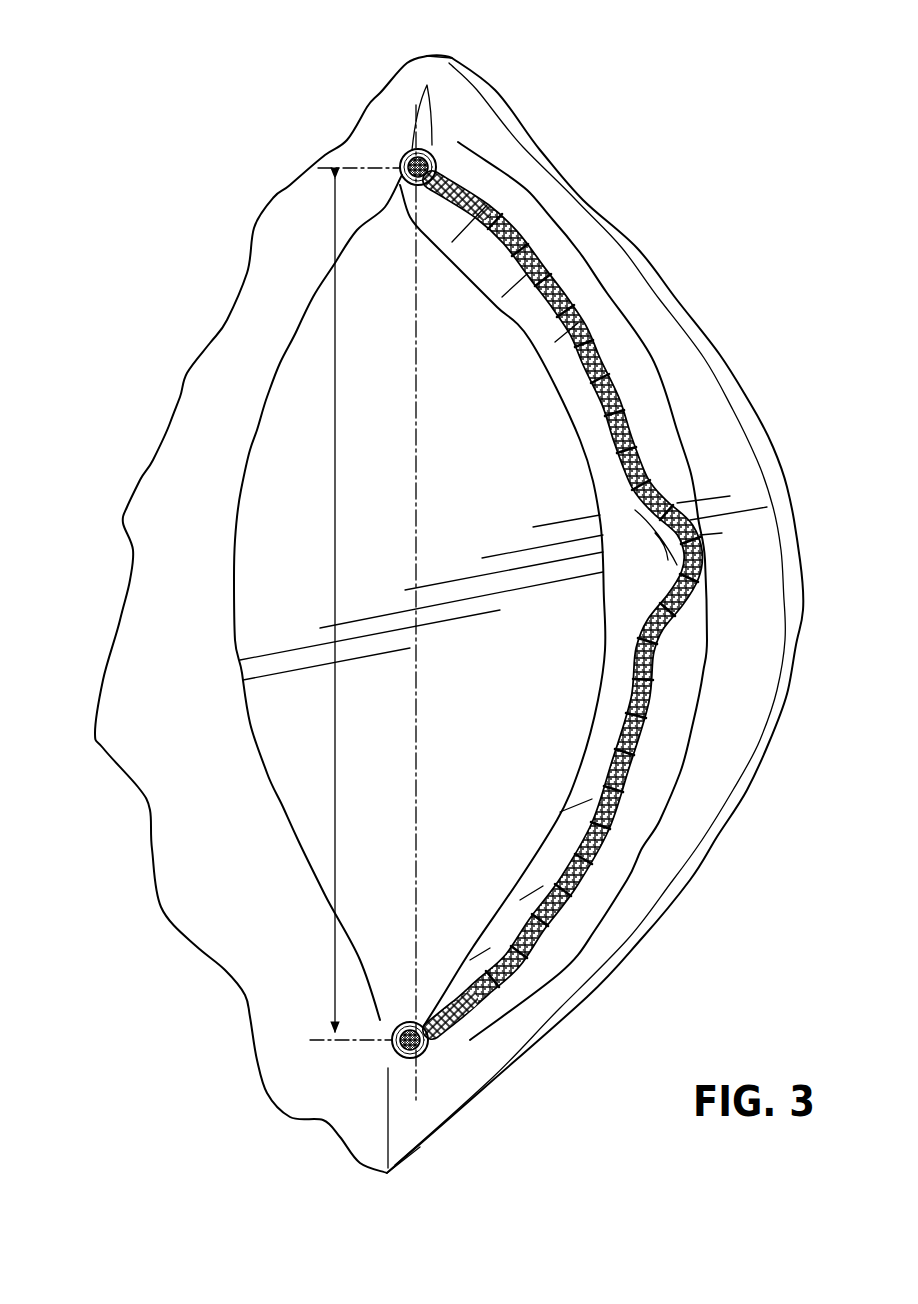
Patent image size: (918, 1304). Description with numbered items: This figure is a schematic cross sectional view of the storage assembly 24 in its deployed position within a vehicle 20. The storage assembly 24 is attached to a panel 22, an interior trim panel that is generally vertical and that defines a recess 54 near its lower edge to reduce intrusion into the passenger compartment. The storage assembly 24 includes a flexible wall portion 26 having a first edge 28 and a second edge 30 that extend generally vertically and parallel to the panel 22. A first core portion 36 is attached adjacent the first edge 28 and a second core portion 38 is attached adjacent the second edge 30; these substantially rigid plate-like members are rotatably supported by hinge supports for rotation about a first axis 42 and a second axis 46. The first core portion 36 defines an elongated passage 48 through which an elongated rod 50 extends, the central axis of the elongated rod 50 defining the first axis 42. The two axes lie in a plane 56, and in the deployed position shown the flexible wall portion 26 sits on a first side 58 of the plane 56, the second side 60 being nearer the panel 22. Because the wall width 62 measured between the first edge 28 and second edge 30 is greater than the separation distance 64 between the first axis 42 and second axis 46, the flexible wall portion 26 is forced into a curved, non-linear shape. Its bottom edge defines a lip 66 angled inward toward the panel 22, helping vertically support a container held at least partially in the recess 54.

The vehicle 20 is at (156, 276).
The panel 22 is at (192, 841).
The storage assembly 24 is at (677, 367).
The flexible wall portion 26 is at (642, 752).
The first edge 28 is at (395, 1060).
The second edge 30 is at (432, 145).
The first core portion 36 is at (439, 1068).
The second core portion 38 is at (459, 142).
The first axis 42 is at (392, 1035).
The second axis 46 is at (405, 155).
The elongated passage 48 is at (419, 152).
The elongated rod 50 is at (400, 165).
The recess 54 is at (334, 551).
The plane 56 is at (413, 1090).
The first side 58 is at (460, 784).
The second side 60 is at (382, 756).
The wall width 62 is at (708, 638).
The separation distance 64 is at (337, 373).
The lip 66 is at (604, 694).